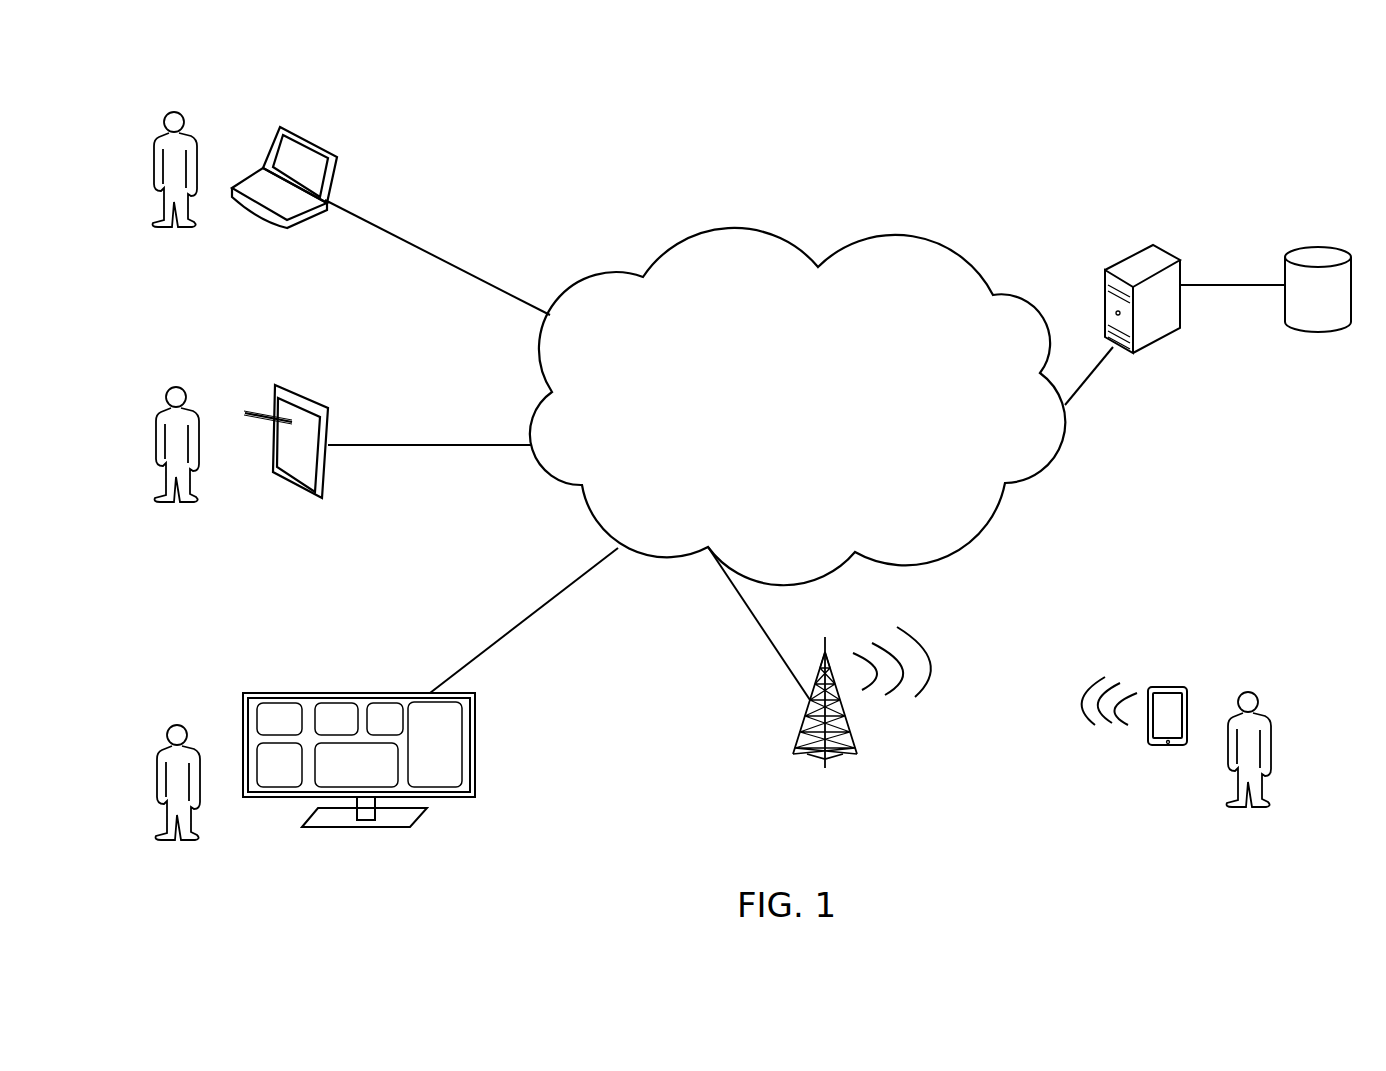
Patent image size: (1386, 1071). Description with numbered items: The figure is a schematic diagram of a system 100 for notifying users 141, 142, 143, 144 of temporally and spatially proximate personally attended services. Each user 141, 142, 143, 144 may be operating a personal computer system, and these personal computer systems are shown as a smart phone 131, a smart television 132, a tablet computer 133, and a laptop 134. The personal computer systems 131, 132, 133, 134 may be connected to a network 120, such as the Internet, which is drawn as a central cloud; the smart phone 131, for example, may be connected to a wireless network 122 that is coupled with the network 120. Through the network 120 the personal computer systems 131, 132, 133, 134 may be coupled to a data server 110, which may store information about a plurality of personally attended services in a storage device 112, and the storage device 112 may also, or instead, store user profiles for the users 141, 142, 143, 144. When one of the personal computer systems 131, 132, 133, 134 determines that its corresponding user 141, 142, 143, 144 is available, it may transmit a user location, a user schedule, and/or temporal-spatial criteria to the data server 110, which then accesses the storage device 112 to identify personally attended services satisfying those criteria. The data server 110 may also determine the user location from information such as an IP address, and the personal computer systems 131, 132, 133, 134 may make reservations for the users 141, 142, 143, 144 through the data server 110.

The system 100 is at (312, 88).
The data server 110 is at (1120, 260).
The storage device 112 is at (1288, 252).
The network 120 is at (718, 228).
The wireless network 122 is at (832, 753).
The smart phone 131 is at (1160, 748).
The smart television 132 is at (332, 827).
The tablet computer 133 is at (287, 485).
The laptop 134 is at (267, 222).
The user 141 is at (1242, 805).
The user 142 is at (172, 840).
The user 143 is at (165, 500).
The user 144 is at (163, 223).